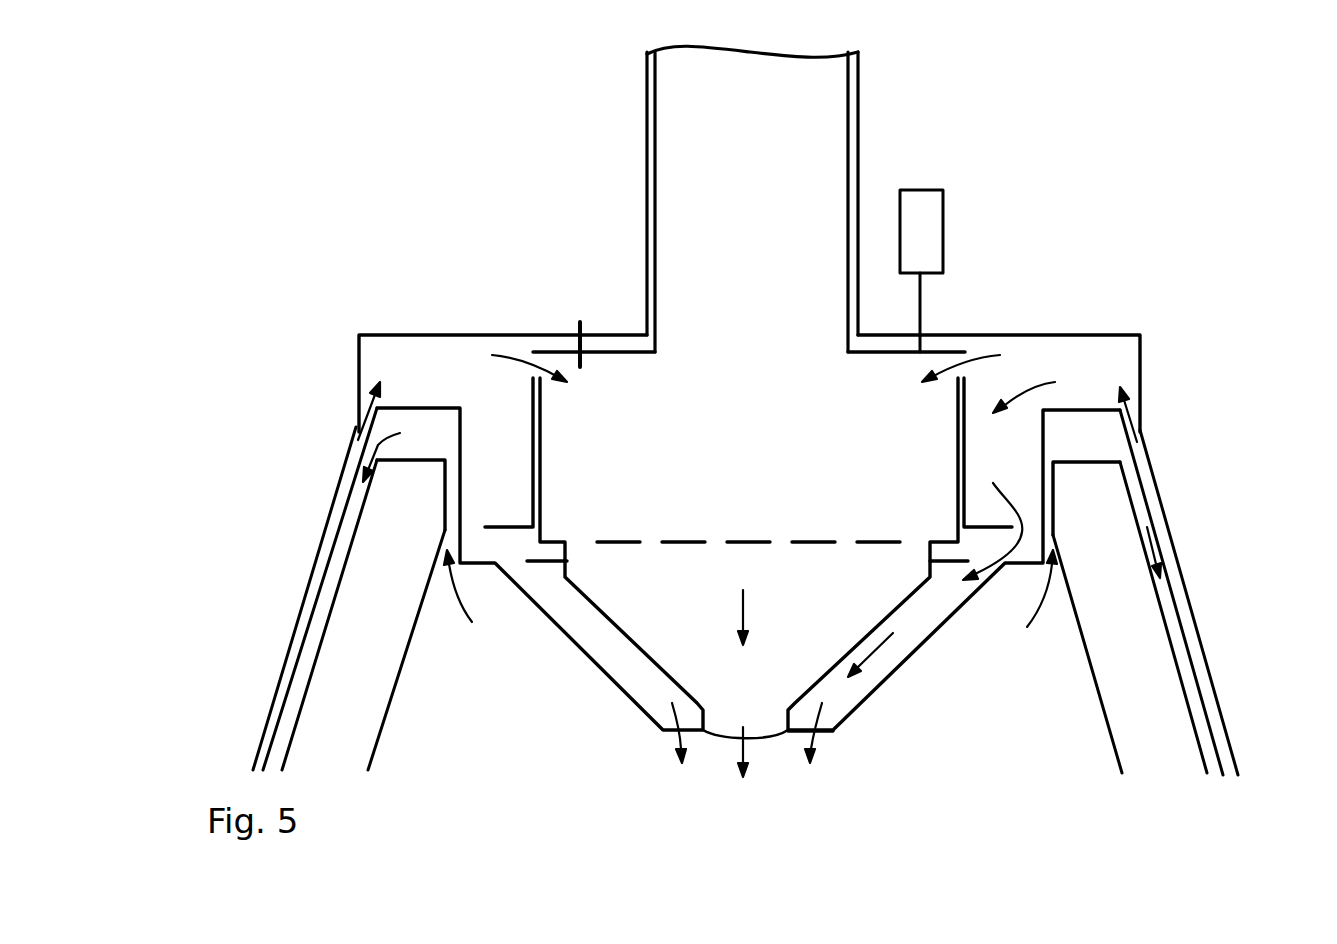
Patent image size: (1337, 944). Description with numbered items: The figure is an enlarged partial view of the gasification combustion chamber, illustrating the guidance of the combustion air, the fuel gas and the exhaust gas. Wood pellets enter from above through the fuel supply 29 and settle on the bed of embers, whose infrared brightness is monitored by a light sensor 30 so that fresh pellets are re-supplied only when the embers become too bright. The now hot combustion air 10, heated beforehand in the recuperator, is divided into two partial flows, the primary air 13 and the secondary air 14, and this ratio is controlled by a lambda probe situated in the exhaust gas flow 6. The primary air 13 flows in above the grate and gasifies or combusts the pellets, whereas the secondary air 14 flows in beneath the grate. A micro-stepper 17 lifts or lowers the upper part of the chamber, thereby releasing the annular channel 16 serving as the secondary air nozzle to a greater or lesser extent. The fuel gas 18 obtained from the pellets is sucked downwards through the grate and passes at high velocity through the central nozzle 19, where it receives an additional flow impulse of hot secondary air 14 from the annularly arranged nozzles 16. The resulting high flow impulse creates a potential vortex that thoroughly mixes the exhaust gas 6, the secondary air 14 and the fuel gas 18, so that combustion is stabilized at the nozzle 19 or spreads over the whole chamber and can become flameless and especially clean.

The exhaust gas flow 6 is at (398, 434).
The hot combustion air 10 is at (377, 408).
The primary air 13 is at (527, 358).
The secondary air 14 is at (1022, 385).
The annular channel 16 is at (815, 738).
The micro-stepper 17 is at (915, 195).
The fuel gas 18 is at (747, 617).
The central nozzle 19 is at (730, 727).
The fuel supply 29 is at (662, 138).
The light sensor 30 is at (579, 325).